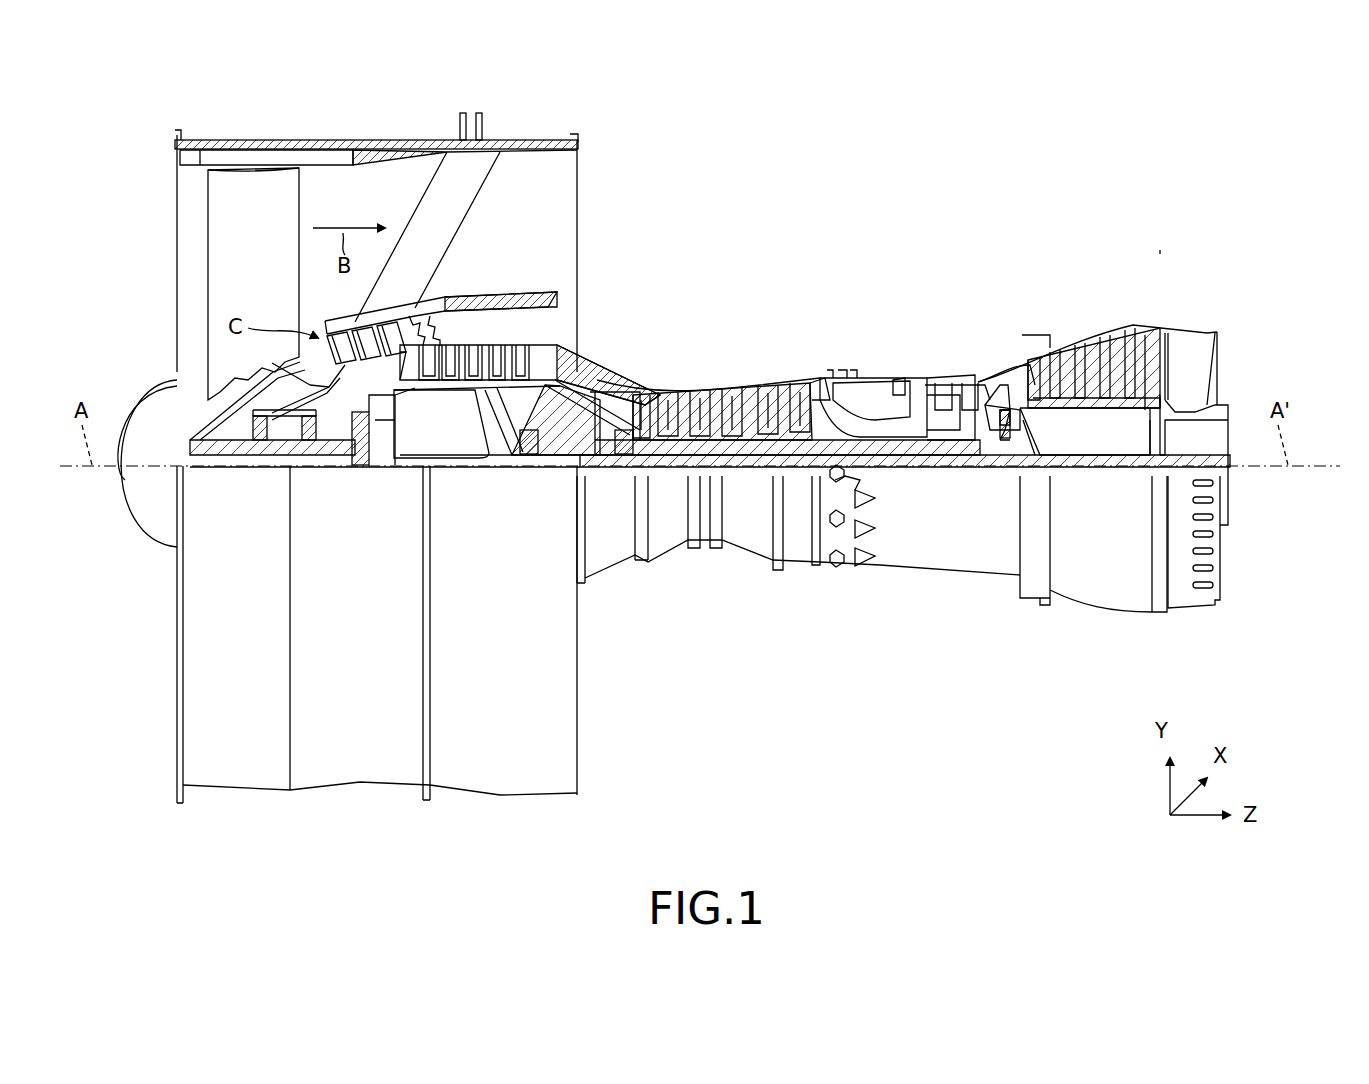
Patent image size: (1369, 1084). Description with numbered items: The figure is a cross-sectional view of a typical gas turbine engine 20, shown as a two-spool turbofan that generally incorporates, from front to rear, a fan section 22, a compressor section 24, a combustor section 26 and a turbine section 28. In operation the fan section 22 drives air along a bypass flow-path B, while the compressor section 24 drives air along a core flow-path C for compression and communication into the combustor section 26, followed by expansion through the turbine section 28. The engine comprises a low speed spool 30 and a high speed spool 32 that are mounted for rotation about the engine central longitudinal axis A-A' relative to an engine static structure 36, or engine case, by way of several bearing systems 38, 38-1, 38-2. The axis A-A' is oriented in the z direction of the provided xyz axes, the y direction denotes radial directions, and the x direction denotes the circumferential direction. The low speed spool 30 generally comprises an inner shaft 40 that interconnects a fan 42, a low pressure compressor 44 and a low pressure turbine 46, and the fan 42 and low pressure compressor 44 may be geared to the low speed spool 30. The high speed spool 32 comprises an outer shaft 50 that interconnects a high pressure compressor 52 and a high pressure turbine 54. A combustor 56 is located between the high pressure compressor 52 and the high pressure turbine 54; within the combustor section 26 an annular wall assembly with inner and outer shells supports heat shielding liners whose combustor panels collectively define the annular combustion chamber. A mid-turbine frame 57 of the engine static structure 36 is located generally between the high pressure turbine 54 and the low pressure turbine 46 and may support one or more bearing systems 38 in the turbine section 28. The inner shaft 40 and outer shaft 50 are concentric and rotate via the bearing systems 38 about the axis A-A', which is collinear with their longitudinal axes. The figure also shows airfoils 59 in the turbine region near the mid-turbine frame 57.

The gas turbine engine 20 is at (930, 178).
The fan section 22 is at (425, 118).
The compressor section 24 is at (432, 258).
The combustor section 26 is at (935, 258).
The turbine section 28 is at (1158, 258).
The low speed spool 30 is at (756, 490).
The high speed spool 32 is at (795, 435).
The engine static structure 36 is at (352, 762).
The bearing system 38 is at (1000, 458).
The bearing system 38-1 is at (265, 447).
The bearing system 38-2 is at (538, 458).
The inner shaft 40 is at (600, 478).
The fan 42 is at (253, 284).
The low pressure compressor 44 is at (512, 355).
The low pressure turbine 46 is at (1090, 345).
The outer shaft 50 is at (876, 445).
The high pressure compressor 52 is at (735, 428).
The high pressure turbine 54 is at (952, 378).
The combustor 56 is at (872, 400).
The mid-turbine frame 57 is at (1005, 400).
The airfoils 59 is at (1002, 380).